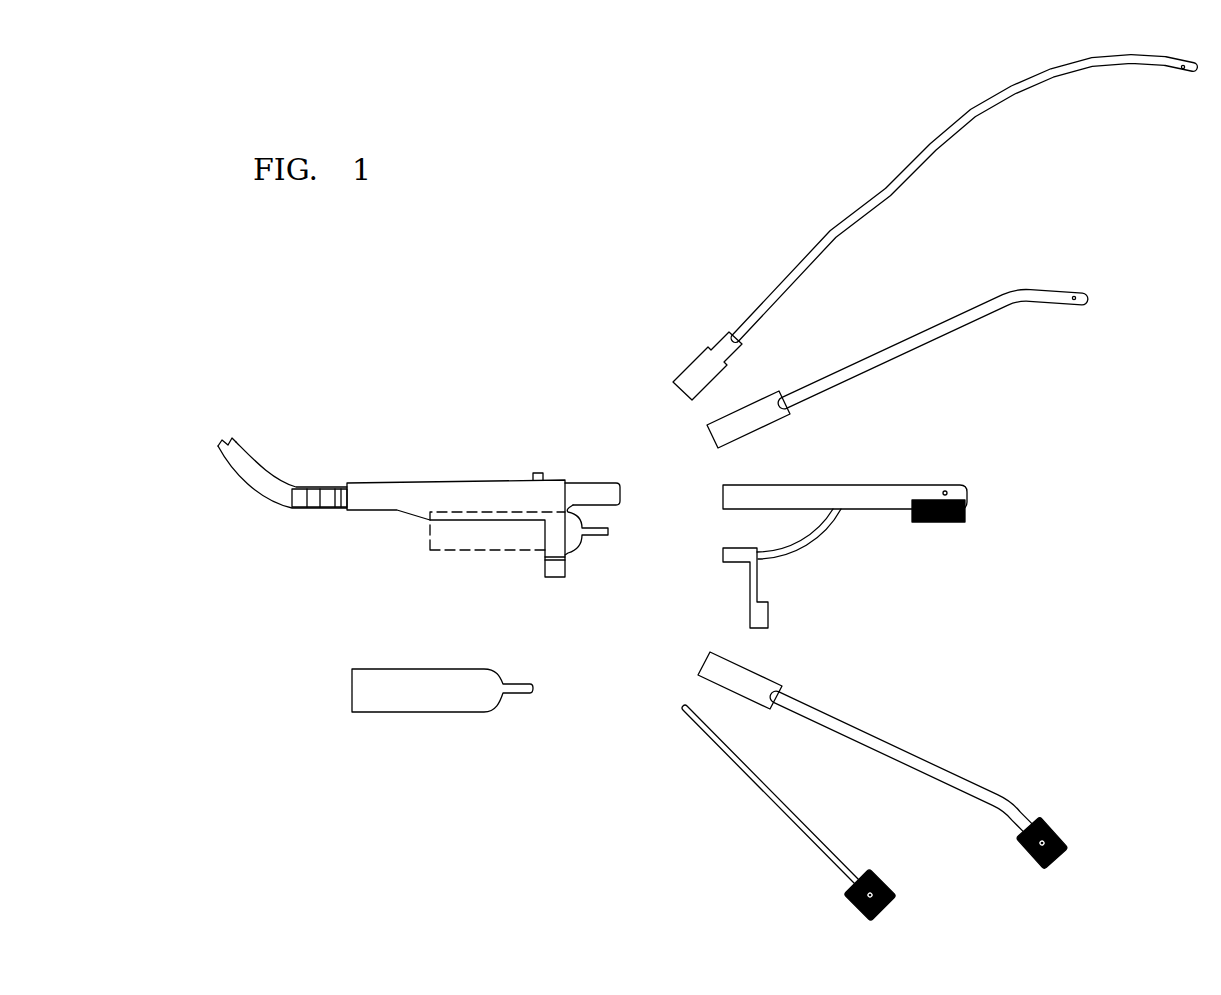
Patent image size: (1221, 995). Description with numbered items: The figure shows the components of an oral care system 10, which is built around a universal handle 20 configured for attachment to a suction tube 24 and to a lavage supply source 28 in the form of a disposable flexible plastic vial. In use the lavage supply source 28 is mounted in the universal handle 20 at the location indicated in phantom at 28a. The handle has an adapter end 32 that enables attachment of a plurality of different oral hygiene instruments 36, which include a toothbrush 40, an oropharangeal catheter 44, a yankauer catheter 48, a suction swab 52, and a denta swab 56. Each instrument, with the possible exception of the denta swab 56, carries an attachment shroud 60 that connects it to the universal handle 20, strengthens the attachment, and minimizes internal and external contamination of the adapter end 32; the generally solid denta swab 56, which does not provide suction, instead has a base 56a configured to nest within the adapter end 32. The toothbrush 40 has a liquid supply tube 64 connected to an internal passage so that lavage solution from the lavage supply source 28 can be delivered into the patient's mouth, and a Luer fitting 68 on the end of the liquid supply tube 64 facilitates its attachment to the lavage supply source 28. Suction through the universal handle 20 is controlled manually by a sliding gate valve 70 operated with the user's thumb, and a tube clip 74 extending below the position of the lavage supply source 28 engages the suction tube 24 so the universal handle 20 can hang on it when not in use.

The oral care system 10 is at (475, 320).
The universal handle 20 is at (503, 487).
The suction tube 24 is at (271, 482).
The lavage supply source 28 is at (430, 700).
The mounted position of lavage supply source 28a is at (482, 538).
The adapter end 32 is at (592, 495).
The oral hygiene instruments 36 is at (788, 188).
The toothbrush 40 is at (920, 492).
The oropharangeal catheter 44 is at (887, 188).
The yankauer catheter 48 is at (950, 325).
The suction swab 52 is at (928, 767).
The denta swab 56 is at (813, 833).
The base of denta swab 56a is at (690, 722).
The attachment shroud 60 is at (690, 363).
The liquid supply tube 64 is at (808, 537).
The Luer fitting 68 is at (770, 583).
The sliding gate valve 70 is at (540, 473).
The tube clip 74 is at (557, 575).